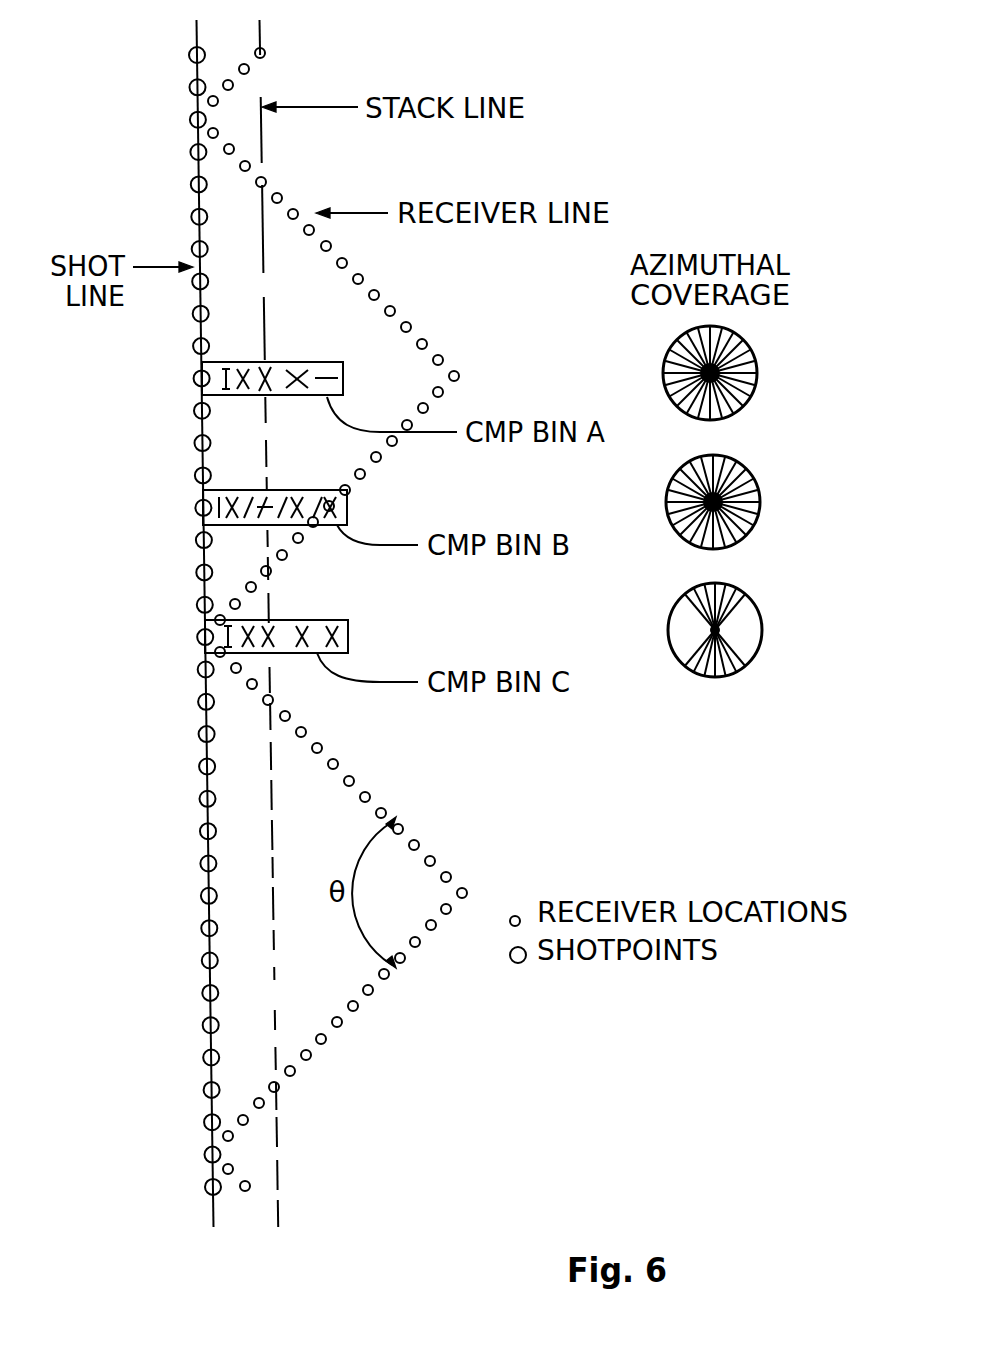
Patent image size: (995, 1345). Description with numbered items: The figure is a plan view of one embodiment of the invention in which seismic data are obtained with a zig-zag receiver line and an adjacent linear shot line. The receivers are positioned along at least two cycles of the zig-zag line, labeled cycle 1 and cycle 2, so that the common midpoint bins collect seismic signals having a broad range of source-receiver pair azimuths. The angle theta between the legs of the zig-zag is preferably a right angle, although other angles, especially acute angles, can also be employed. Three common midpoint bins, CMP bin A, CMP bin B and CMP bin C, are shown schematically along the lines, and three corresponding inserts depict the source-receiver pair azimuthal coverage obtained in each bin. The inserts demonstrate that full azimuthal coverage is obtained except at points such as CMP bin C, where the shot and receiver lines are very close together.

The zig zag line cycle 1 is at (388, 808).
The zig zag line cycle 2 is at (416, 308).
The CMP bin A is at (757, 358).
The CMP bin B is at (765, 493).
The CMP bin C is at (763, 613).